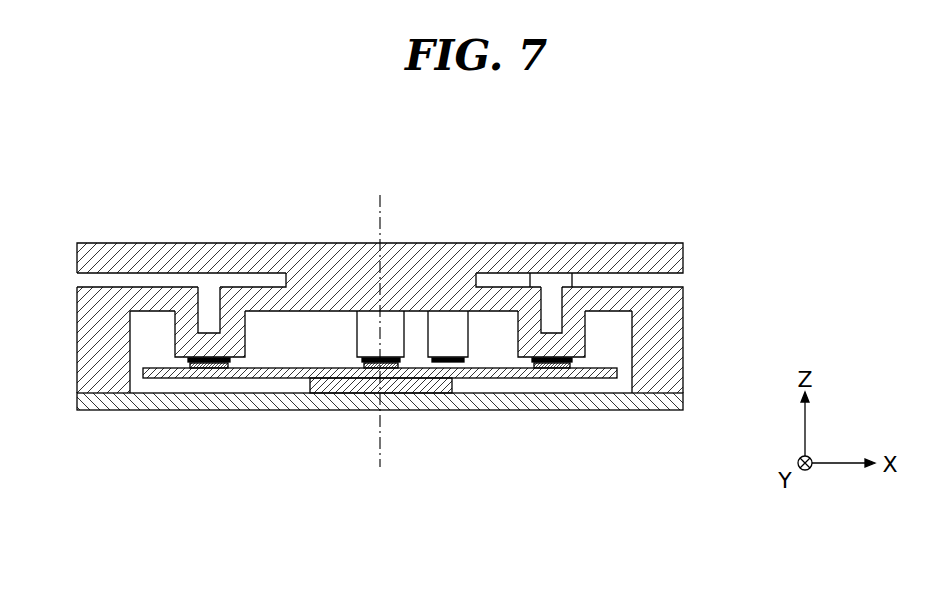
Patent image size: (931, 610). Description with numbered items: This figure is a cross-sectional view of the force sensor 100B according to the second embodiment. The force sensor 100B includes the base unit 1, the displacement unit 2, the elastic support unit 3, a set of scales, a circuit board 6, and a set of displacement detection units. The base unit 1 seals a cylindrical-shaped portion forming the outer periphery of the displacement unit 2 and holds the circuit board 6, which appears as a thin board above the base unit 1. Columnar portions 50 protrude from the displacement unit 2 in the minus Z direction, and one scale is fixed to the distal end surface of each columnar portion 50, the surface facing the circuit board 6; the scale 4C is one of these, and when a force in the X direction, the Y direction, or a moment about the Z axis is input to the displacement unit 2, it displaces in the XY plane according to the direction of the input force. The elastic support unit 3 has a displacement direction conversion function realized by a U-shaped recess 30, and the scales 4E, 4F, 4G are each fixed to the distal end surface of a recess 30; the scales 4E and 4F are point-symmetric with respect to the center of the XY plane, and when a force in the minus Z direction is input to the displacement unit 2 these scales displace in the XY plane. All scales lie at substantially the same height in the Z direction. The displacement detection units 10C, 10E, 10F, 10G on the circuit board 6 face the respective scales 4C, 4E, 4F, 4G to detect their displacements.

The force sensor 100B is at (413, 142).
The base unit 1 is at (674, 400).
The displacement unit 2 is at (495, 257).
The elastic support unit 3 is at (150, 295).
The U-shaped recess 30 is at (187, 297).
The columnar portion 50 is at (453, 317).
The circuit board 6 is at (598, 379).
The scale 4C is at (476, 362).
The scale 4E is at (538, 362).
The scale 4F is at (203, 363).
The scale 4G is at (355, 361).
The displacement detection unit 10C is at (457, 381).
The displacement detection unit 10E is at (563, 369).
The displacement detection unit 10F is at (217, 369).
The displacement detection unit 10G is at (393, 368).